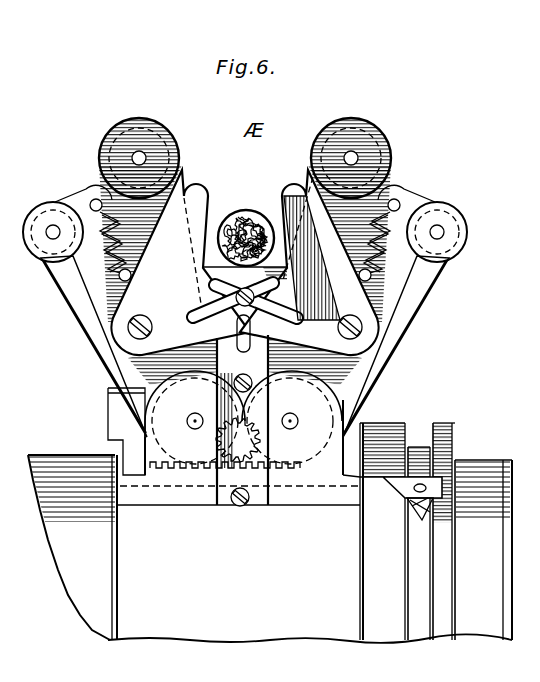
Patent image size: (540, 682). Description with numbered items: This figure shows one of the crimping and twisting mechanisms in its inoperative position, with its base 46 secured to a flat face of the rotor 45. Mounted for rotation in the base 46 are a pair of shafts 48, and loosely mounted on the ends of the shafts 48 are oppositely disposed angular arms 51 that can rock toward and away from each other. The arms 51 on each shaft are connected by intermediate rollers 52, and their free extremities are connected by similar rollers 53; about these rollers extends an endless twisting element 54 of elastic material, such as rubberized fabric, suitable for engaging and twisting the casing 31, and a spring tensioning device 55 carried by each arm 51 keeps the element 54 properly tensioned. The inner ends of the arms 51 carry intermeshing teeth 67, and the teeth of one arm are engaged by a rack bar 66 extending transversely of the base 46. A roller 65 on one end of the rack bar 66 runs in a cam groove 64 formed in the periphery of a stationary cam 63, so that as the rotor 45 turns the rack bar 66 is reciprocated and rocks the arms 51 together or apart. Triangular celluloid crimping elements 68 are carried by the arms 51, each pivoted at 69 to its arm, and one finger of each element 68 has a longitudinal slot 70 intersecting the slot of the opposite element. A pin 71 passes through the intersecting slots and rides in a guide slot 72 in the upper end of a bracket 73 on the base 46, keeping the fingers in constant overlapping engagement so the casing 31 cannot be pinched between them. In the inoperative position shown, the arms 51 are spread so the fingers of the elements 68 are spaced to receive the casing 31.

The casing 31 is at (250, 210).
The rotor 45 is at (270, 515).
The base 46 is at (295, 497).
The shafts 48 is at (195, 418).
The angular arms 51 is at (133, 365).
The intermediate rollers 52 is at (37, 206).
The rollers 53 is at (137, 122).
The endless twisting element 54 is at (50, 280).
The spring tensioning device 55 is at (95, 200).
The stationary cam 63 is at (423, 440).
The cam groove 64 is at (445, 420).
The roller 65 is at (415, 518).
The rack bar 66 is at (379, 480).
The intermeshing teeth 67 is at (233, 457).
The crimping elements 68 is at (200, 190).
The pivot 69 is at (128, 332).
The longitudinal slot 70 is at (290, 318).
The pin 71 is at (236, 295).
The guide slot 72 is at (337, 328).
The bracket 73 is at (152, 328).